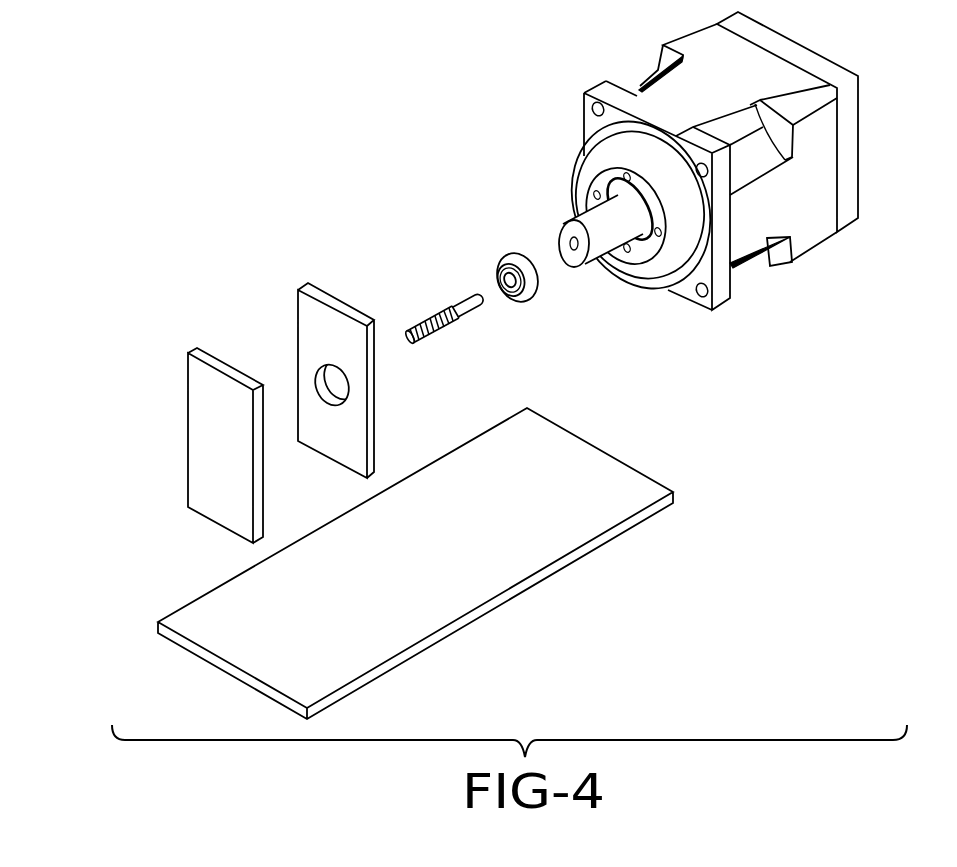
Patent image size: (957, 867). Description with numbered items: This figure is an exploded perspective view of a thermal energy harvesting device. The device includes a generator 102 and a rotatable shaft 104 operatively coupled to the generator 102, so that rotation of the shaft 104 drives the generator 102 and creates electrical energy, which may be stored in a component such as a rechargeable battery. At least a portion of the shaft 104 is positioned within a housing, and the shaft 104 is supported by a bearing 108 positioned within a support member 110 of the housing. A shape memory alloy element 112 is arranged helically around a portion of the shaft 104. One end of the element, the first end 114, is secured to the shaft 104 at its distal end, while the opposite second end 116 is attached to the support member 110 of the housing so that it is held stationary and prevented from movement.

The generator 102 is at (816, 146).
The rotatable shaft 104 is at (452, 312).
The bearing 108 is at (535, 293).
The support member 110 is at (315, 322).
The shape memory alloy element 112 is at (425, 318).
The first end of SMA element 114 is at (415, 343).
The second end of SMA element 116 is at (467, 315).